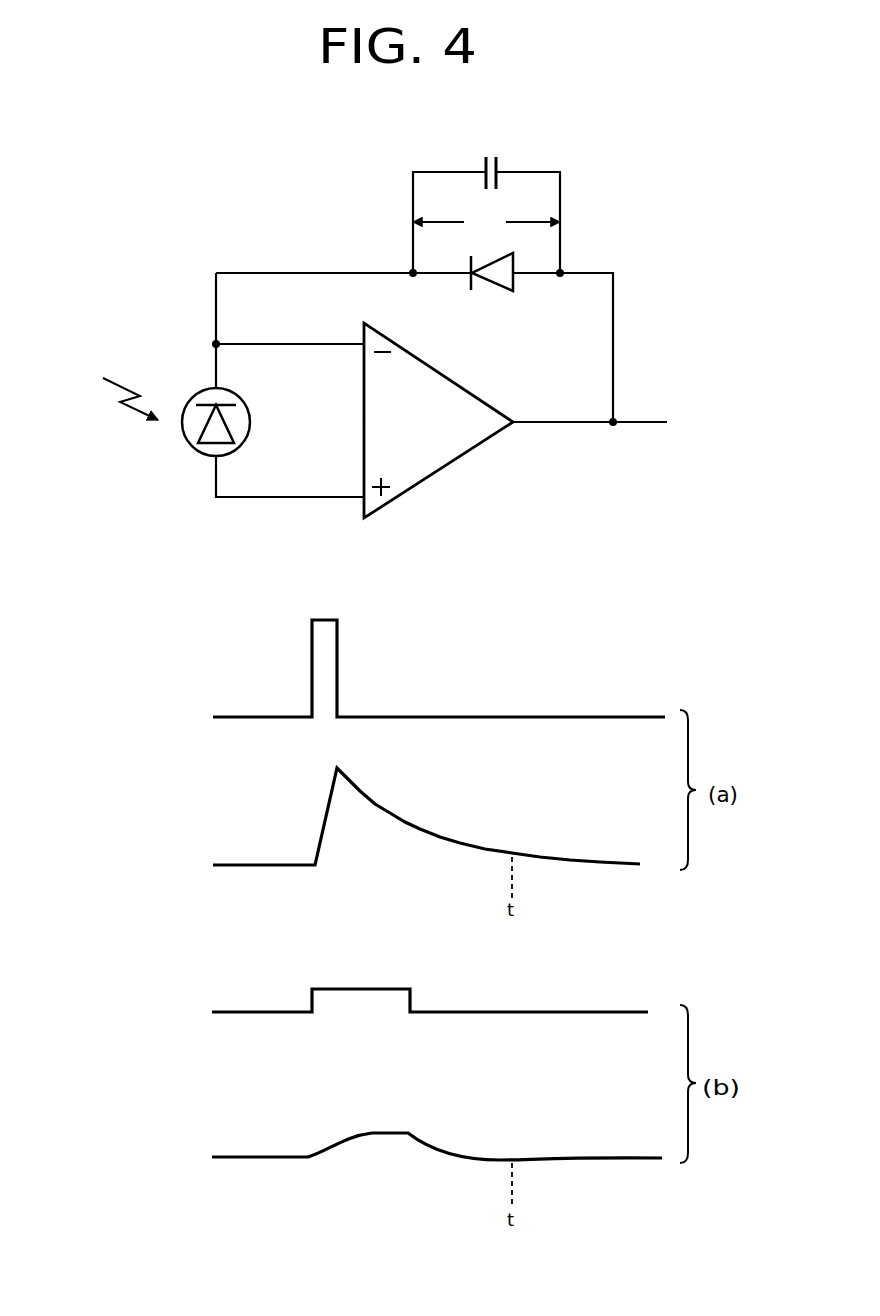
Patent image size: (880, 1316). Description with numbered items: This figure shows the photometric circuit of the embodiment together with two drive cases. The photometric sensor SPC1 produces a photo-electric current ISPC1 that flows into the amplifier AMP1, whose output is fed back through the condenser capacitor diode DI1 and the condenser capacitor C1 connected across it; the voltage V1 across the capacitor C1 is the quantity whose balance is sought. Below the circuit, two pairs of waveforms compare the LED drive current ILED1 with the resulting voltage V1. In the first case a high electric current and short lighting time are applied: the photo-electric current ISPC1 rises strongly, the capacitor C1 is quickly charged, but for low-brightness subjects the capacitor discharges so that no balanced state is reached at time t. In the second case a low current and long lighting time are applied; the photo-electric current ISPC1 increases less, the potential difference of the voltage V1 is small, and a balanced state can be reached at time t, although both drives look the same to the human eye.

The capacitor C1 is at (486, 204).
The voltage V1 is at (390, 686).
The condenser capacitor diode DI1 is at (499, 293).
The amplifier AMP1 is at (438, 420).
The photometric sensor SPC1 is at (165, 452).
The photo-electric current ISPC1 is at (191, 300).
The LED drive current ILED1 is at (378, 816).